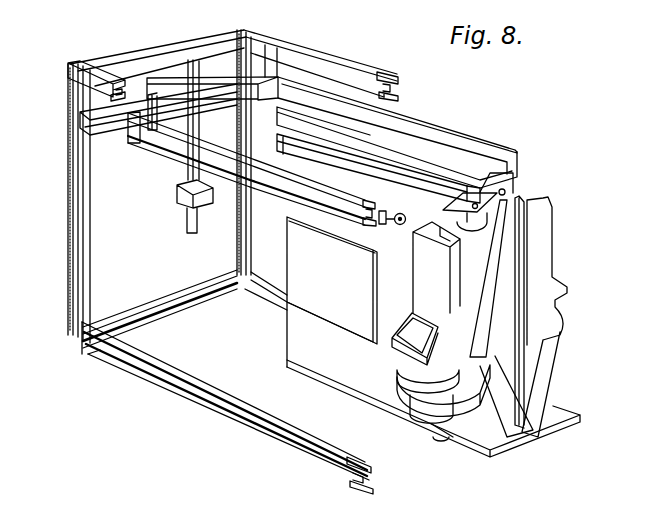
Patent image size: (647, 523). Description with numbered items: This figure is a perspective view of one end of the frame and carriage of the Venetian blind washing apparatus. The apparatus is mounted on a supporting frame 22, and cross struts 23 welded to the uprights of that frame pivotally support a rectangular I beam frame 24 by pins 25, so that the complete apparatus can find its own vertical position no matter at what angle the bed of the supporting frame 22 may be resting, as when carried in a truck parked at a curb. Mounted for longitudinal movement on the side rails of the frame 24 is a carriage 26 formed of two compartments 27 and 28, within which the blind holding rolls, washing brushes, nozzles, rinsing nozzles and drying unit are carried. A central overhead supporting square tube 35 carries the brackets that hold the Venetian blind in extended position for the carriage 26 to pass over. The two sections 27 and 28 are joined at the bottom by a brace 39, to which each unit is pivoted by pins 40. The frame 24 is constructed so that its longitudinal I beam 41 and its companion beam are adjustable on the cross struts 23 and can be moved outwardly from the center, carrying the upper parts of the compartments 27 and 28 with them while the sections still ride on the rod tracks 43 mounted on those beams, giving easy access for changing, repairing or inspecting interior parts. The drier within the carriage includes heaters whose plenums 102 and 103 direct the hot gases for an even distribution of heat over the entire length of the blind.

The supporting frame 22 is at (124, 60).
The cross struts 23 is at (102, 111).
The rectangular I beam frame 24 is at (141, 128).
The pins 25 is at (177, 108).
The carriage 26 is at (368, 214).
The compartment 27 is at (397, 125).
The compartment 28 is at (378, 168).
The central overhead supporting square tube 35 is at (220, 90).
The brace 39 is at (383, 406).
The pins 40 is at (237, 178).
The longitudinal I beam 41 is at (317, 117).
The rod tracks 43 is at (383, 224).
The plenum 102 is at (510, 255).
The plenum 103 is at (527, 281).